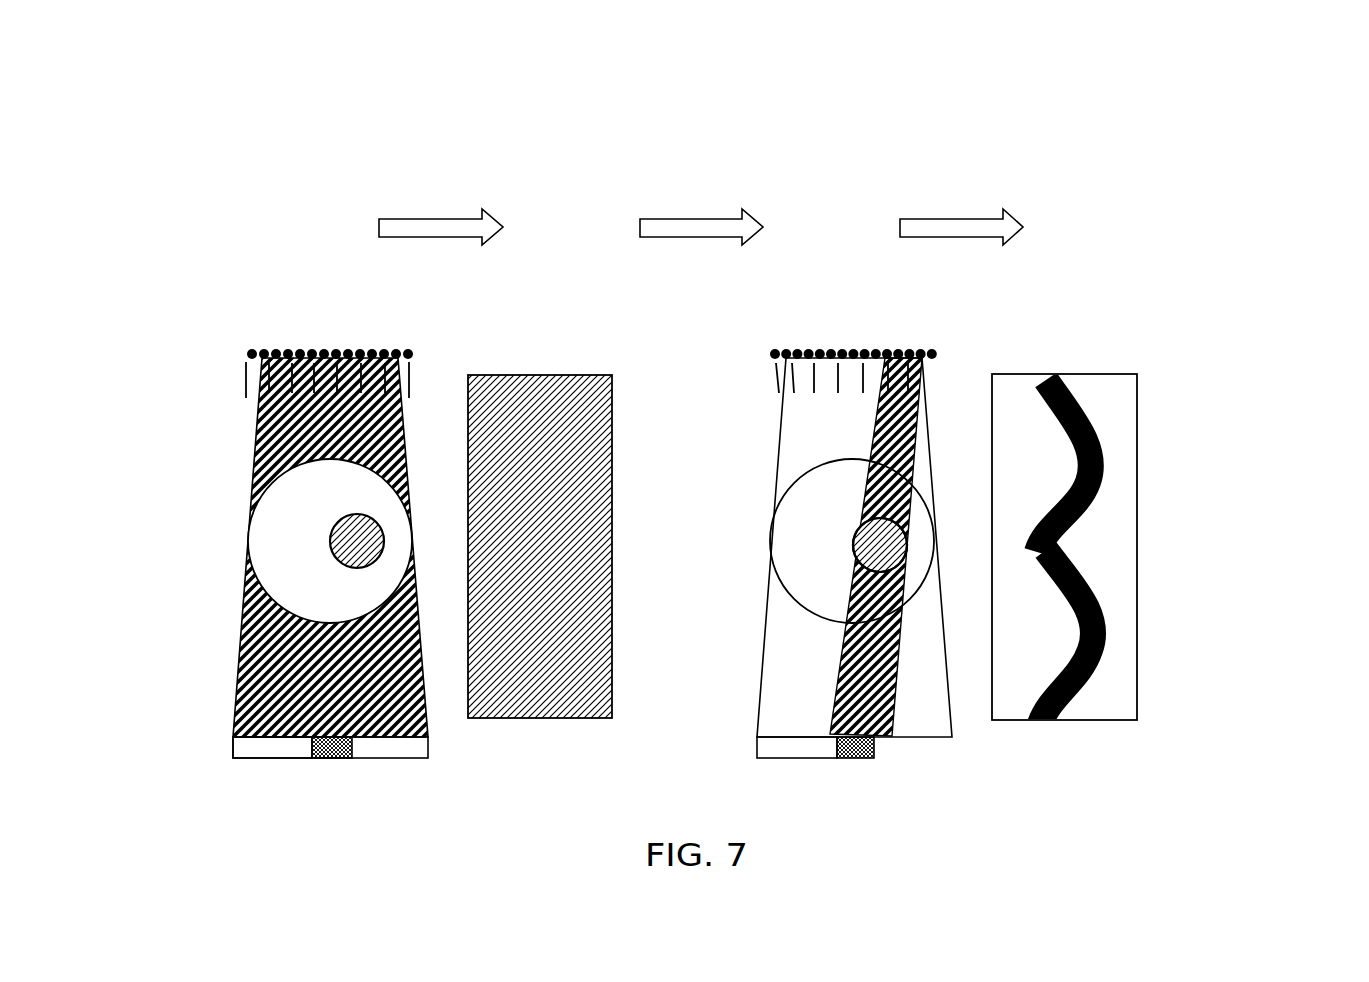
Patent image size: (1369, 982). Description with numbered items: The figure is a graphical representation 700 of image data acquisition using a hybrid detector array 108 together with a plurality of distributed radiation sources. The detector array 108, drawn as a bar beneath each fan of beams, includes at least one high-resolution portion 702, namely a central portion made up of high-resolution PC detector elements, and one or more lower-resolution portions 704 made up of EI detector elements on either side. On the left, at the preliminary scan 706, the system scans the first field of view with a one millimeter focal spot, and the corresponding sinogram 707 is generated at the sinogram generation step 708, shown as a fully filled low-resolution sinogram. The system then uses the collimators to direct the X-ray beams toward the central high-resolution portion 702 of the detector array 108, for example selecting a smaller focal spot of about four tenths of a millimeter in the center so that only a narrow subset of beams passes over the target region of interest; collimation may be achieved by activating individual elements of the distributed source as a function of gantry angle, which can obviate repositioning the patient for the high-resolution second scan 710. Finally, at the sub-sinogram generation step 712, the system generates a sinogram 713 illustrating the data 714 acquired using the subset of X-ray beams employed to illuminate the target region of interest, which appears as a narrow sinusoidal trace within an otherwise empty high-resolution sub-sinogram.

The graphical representation 700 is at (1254, 99).
The hybrid detector array 108 is at (231, 747).
The high-resolution portion 702 is at (331, 756).
The lower-resolution portion 704 is at (258, 756).
The preliminary scan 706 is at (347, 305).
The sinogram 707 is at (612, 442).
The sinogram generation step 708 is at (621, 305).
The high-resolution second scan 710 is at (864, 305).
The sub-sinogram generation step 712 is at (1126, 305).
The sinogram 713 is at (1137, 618).
The acquired data 714 is at (1106, 445).